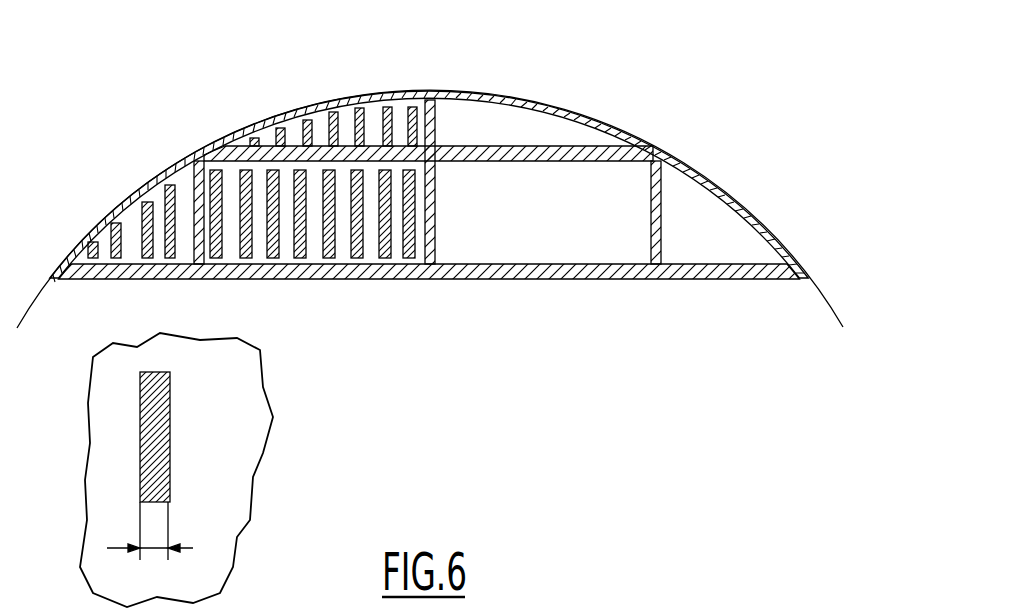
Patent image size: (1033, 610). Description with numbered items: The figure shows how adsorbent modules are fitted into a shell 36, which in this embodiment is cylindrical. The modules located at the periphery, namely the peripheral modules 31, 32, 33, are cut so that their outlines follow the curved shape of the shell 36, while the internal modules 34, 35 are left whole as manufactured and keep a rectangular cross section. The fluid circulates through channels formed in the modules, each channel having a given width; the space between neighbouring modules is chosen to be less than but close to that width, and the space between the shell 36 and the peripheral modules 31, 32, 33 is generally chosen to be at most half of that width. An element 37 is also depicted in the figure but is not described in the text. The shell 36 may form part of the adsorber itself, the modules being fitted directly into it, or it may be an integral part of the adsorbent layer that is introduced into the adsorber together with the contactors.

The peripheral module 31 is at (135, 232).
The peripheral module 32 is at (370, 126).
The peripheral module 33 is at (507, 134).
The internal module 34 is at (315, 218).
The internal module 35 is at (552, 203).
The shell 36 is at (707, 177).
The partition plate 37 is at (242, 147).